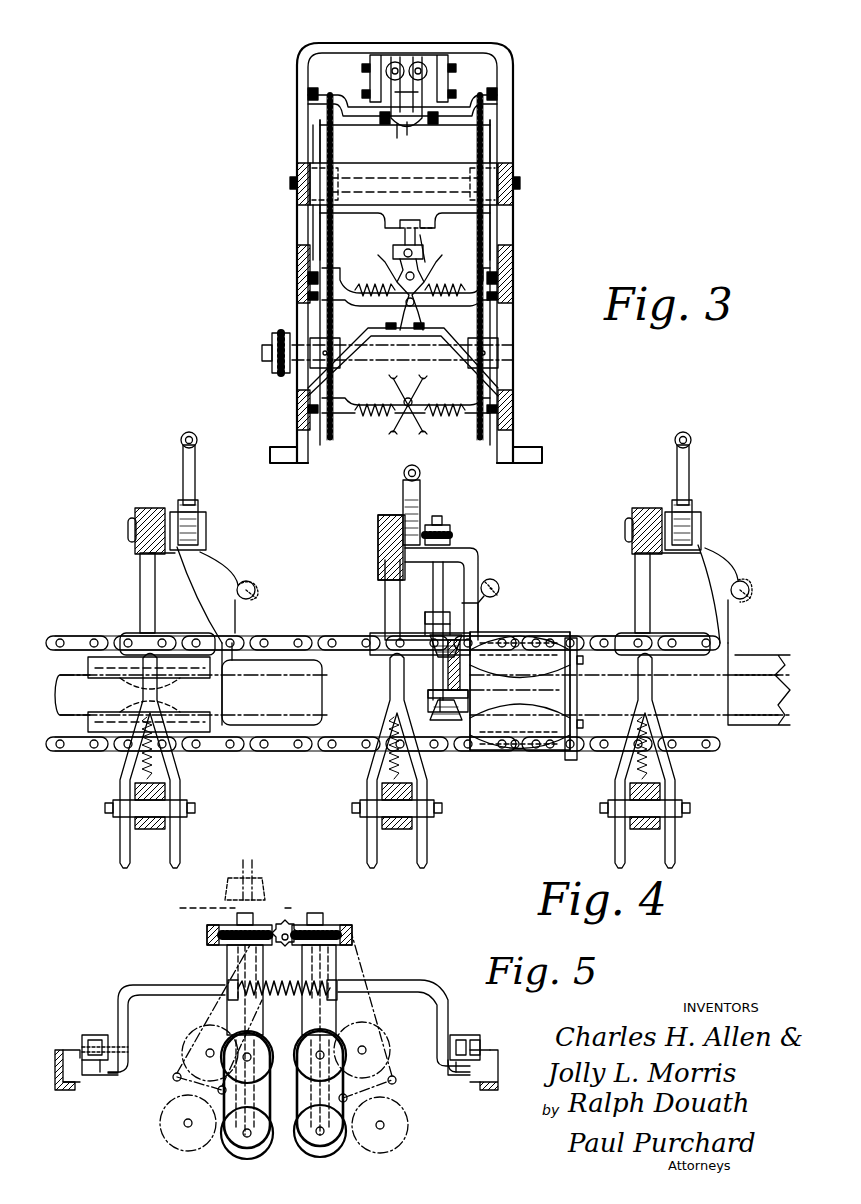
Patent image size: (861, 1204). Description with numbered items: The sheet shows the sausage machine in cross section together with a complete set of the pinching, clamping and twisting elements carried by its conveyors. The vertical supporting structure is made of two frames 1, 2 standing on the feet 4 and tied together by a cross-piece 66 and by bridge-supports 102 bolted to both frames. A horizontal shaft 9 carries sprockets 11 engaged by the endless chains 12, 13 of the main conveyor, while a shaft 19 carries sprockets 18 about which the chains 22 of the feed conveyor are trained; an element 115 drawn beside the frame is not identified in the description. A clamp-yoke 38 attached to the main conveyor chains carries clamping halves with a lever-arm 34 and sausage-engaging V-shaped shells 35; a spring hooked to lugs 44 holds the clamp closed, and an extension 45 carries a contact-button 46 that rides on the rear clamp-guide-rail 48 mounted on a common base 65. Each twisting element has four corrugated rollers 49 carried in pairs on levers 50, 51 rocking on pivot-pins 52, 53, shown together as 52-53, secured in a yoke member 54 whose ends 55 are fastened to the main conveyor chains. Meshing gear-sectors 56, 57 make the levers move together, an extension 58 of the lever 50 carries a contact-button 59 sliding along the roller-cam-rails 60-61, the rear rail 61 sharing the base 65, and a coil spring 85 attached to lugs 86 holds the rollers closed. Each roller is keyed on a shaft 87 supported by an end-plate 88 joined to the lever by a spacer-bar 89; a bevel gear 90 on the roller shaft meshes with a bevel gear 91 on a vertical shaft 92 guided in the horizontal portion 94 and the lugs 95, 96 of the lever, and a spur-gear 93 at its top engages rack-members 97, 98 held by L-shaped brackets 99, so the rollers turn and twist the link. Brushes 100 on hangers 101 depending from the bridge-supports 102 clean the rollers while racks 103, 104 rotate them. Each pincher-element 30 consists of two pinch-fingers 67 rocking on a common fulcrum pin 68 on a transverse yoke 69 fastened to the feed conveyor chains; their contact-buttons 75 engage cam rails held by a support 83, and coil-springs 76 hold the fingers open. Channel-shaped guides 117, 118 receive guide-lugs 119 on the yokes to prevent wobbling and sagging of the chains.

In FIG. 3, the frame 1 is at (297, 237).
In FIG. 3, the frame 2 is at (513, 230).
In FIG. 3, the feet 4 is at (277, 447).
In FIG. 3, the shaft 9 is at (297, 180).
In FIG. 3, the sprockets 11 is at (320, 112).
In FIG. 4, the endless chain 12 is at (300, 638).
In FIG. 5, the endless chain 12 is at (92, 1035).
In FIG. 5, the endless chain 13 is at (462, 1035).
In FIG. 3, the sprockets 18 is at (328, 330).
In FIG. 3, the shaft 19 is at (445, 360).
In FIG. 4, the chains 22 is at (300, 752).
In FIG. 3, the pincher-element 30 is at (392, 430).
In FIG. 4, the lever-arm 34 is at (232, 620).
In FIG. 4, the V-shaped shells 35 is at (262, 752).
In FIG. 4, the clamp-yoke 38 is at (140, 580).
In FIG. 4, the lugs 44 is at (745, 572).
In FIG. 4, the extension 45 is at (183, 462).
In FIG. 4, the contact-button 46 is at (181, 440).
In FIG. 3, the clamp-guide-rail 48 is at (425, 228).
In FIG. 3, the rollers 49 is at (405, 60).
In FIG. 4, the rollers 49 is at (522, 762).
In FIG. 5, the rollers 49 is at (295, 1079).
In FIG. 5, the lever 50 is at (225, 1012).
In FIG. 5, the lever 51 is at (340, 1010).
In FIG. 5, the pivot-pin 52 is at (190, 910).
In FIG. 4, the pivot-pins 52-53 is at (380, 540).
In FIG. 5, the pivot-pin 53 is at (340, 916).
In FIG. 4, the yoke member 54 is at (385, 605).
In FIG. 5, the yoke member 54 is at (440, 985).
In FIG. 5, the ends 55 is at (108, 1078).
In FIG. 5, the gear-sector 56 is at (292, 918).
In FIG. 5, the gear-sector 57 is at (260, 885).
In FIG. 4, the extension 58 is at (420, 493).
In FIG. 5, the extension 58 is at (228, 892).
In FIG. 4, the contact-button 59 is at (404, 473).
In FIG. 5, the contact-button 59 is at (228, 882).
In FIG. 5, the roller-cam-rails 60-61 is at (262, 868).
In FIG. 3, the roller-cam-rail 61 is at (405, 238).
In FIG. 3, the base 65 is at (385, 218).
In FIG. 3, the cross-piece 66 is at (455, 163).
In FIG. 4, the pinch-fingers 67 is at (125, 772).
In FIG. 4, the fulcrum pin 68 is at (190, 808).
In FIG. 3, the yoke 69 is at (428, 412).
In FIG. 4, the yoke 69 is at (150, 830).
In FIG. 4, the contact-buttons 75 is at (122, 862).
In FIG. 3, the coil-springs 76 is at (450, 412).
In FIG. 3, the support 83 is at (383, 337).
In FIG. 4, the coil spring 85 is at (499, 586).
In FIG. 5, the coil spring 85 is at (268, 995).
In FIG. 4, the lugs 86 is at (496, 594).
In FIG. 5, the lugs 86 is at (228, 990).
In FIG. 4, the shaft 87 is at (575, 640).
In FIG. 5, the shaft 87 is at (348, 1042).
In FIG. 4, the end-plate 88 is at (565, 762).
In FIG. 5, the end-plate 88 is at (190, 1108).
In FIG. 4, the spacer-bar 89 is at (515, 695).
In FIG. 5, the spacer-bar 89 is at (175, 1082).
In FIG. 4, the bevel gear 90 is at (462, 640).
In FIG. 4, the bevel gear 91 is at (445, 635).
In FIG. 4, the vertical shaft 92 is at (433, 590).
In FIG. 5, the vertical shaft 92 is at (227, 965).
In FIG. 3, the spur-gear 93 is at (405, 134).
In FIG. 4, the spur-gear 93 is at (450, 532).
In FIG. 5, the spur-gear 93 is at (237, 913).
In FIG. 4, the horizontal portion 94 is at (445, 552).
In FIG. 4, the lug 95 is at (425, 618).
In FIG. 4, the lug 96 is at (428, 698).
In FIG. 3, the rack-member 97 is at (385, 263).
In FIG. 5, the rack-member 97 is at (207, 934).
In FIG. 3, the rack-member 98 is at (425, 245).
In FIG. 5, the rack-member 98 is at (352, 934).
In FIG. 3, the L-shaped brackets 99 is at (320, 218).
In FIG. 3, the brushes 100 is at (393, 62).
In FIG. 3, the hangers 101 is at (370, 80).
In FIG. 3, the bridge-supports 102 is at (346, 39).
In FIG. 3, the rack 103 is at (385, 124).
In FIG. 3, the rack 104 is at (433, 124).
In FIG. 3, the sprocket 115 is at (272, 347).
In FIG. 3, the channel-shaped guide 117 is at (308, 92).
In FIG. 5, the channel-shaped guide 117 is at (62, 1050).
In FIG. 3, the channel-shaped guide 118 is at (308, 300).
In FIG. 5, the guide-lugs 119 is at (78, 1090).